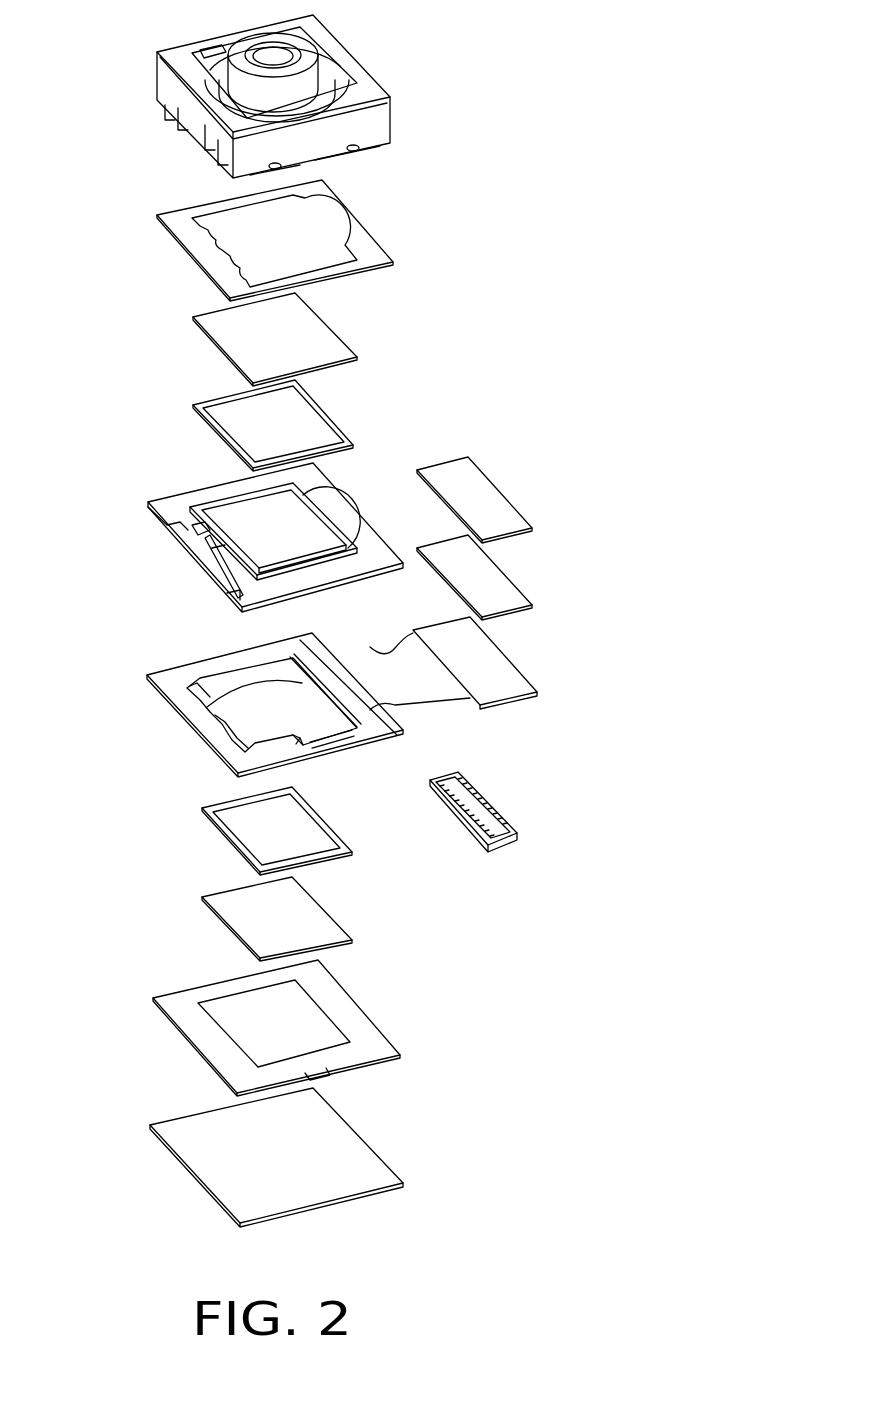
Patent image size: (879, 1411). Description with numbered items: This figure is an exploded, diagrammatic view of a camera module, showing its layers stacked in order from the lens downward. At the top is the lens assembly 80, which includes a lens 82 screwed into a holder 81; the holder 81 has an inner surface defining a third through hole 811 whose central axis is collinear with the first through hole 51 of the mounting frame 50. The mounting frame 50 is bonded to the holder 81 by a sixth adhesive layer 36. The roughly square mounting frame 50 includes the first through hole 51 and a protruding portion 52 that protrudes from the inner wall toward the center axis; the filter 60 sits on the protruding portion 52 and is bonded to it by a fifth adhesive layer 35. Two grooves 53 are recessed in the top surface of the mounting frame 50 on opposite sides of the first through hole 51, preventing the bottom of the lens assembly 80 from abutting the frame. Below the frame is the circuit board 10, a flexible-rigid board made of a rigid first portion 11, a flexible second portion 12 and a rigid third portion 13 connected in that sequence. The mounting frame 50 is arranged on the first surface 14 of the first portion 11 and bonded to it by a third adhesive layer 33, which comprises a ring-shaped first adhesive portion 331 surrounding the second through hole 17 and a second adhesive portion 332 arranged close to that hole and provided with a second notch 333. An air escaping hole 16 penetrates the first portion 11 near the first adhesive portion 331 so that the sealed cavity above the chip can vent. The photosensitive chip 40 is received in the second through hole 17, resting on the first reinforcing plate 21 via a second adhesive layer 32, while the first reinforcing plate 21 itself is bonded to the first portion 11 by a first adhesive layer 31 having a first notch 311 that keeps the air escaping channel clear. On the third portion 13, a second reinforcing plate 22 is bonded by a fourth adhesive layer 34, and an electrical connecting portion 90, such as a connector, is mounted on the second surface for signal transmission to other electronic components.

The circuit board 10 is at (607, 712).
The first portion 11 is at (402, 732).
The second portion 12 is at (433, 688).
The third portion 13 is at (518, 683).
The first surface 14 is at (378, 653).
The air escaping hole 16 is at (313, 750).
The second through hole 17 is at (280, 665).
The first reinforcing plate 21 is at (368, 1163).
The second reinforcing plate 22 is at (473, 477).
The first adhesive layer 31 is at (370, 1033).
The first notch 311 is at (323, 1075).
The second adhesive layer 32 is at (232, 910).
The third adhesive layer 33 is at (85, 695).
The first adhesive portion 331 is at (187, 690).
The second adhesive portion 332 is at (217, 698).
The second notch 333 is at (360, 727).
The fourth adhesive layer 34 is at (492, 578).
The fifth adhesive layer 35 is at (325, 413).
The sixth adhesive layer 36 is at (370, 245).
The photosensitive chip 40 is at (232, 822).
The mounting frame 50 is at (327, 492).
The first through hole 51 is at (240, 510).
The protruding portion 52 is at (215, 560).
The grooves 53 is at (207, 535).
The filter 60 is at (330, 345).
The lens assembly 80 is at (294, 89).
The holder 81 is at (363, 82).
The third through hole 811 is at (210, 53).
The lens 82 is at (313, 58).
The electrical connecting portion 90 is at (513, 830).